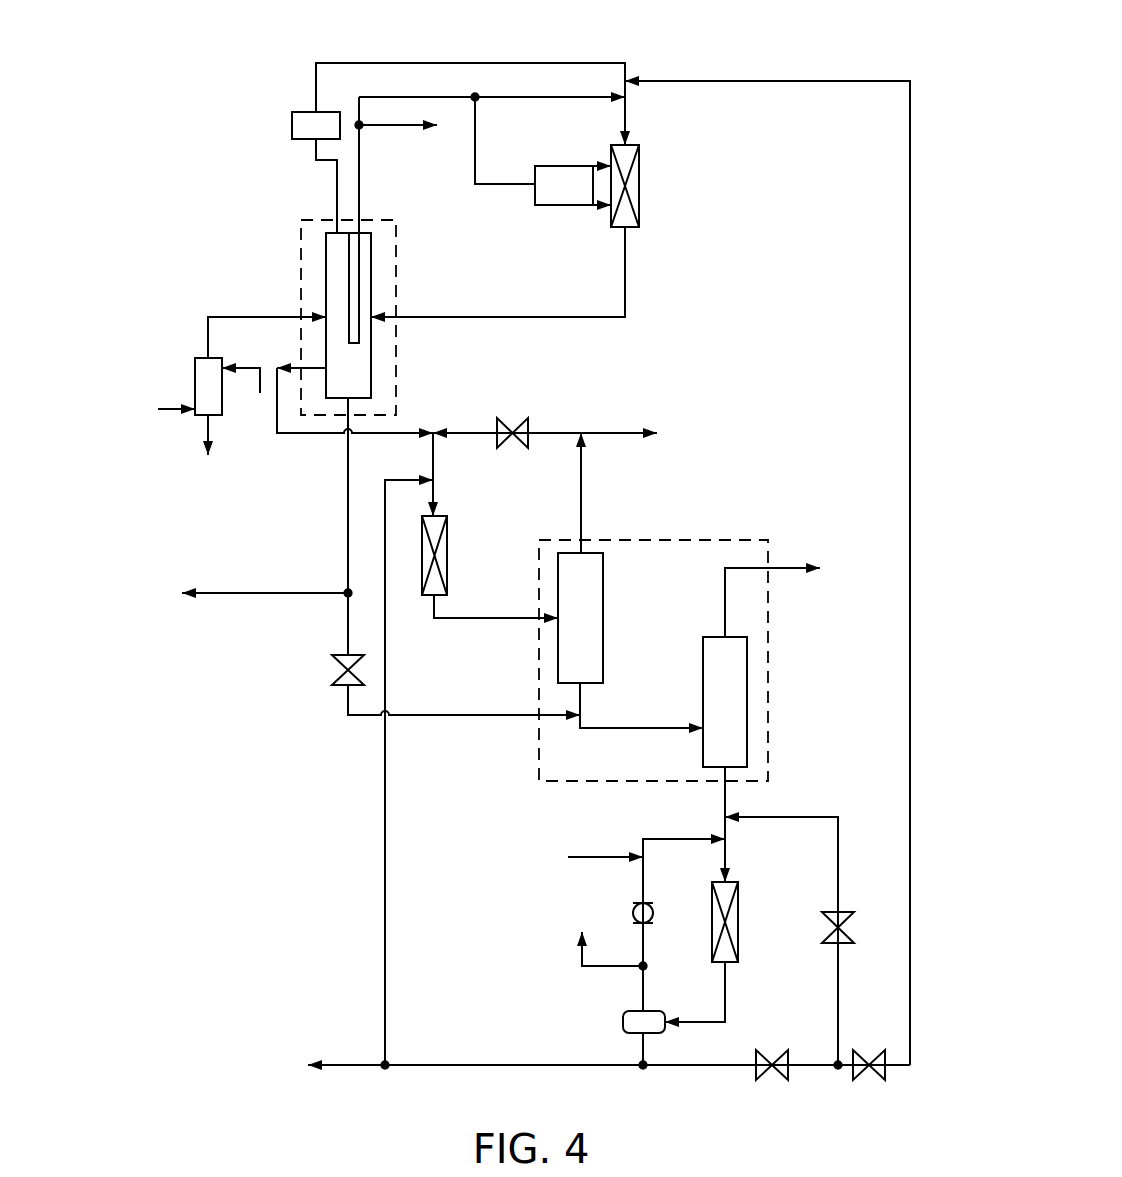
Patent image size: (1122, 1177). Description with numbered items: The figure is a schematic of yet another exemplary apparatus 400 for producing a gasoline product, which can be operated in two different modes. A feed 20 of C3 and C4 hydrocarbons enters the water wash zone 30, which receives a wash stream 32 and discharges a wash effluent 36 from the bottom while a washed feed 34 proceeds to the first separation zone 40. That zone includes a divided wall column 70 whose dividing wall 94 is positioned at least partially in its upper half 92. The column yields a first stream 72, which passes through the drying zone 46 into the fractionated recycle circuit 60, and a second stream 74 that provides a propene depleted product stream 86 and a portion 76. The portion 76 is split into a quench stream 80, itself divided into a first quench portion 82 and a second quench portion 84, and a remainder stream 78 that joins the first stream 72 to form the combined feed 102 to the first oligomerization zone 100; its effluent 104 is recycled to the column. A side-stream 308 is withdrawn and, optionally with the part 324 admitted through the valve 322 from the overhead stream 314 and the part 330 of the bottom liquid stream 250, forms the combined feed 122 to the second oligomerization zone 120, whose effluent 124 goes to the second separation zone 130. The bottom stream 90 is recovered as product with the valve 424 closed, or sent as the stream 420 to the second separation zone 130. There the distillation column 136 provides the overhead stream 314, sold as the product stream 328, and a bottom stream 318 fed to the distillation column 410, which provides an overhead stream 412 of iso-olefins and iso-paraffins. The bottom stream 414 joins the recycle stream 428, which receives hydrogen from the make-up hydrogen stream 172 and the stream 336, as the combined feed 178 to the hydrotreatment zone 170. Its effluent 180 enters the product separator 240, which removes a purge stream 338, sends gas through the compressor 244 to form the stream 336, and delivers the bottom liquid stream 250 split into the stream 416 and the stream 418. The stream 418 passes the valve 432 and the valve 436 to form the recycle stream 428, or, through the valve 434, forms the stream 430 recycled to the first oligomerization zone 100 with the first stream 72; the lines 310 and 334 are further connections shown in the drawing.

The feed 20 is at (168, 410).
The water wash zone 30 is at (198, 358).
The wash stream 32 is at (254, 367).
The washed feed 34 is at (237, 316).
The wash effluent 36 is at (214, 432).
The first separation zone 40 is at (312, 220).
The drying zone 46 is at (305, 112).
The fractionated recycle circuit 60 is at (655, 62).
The divided wall column 70 is at (336, 378).
The first stream 72 is at (332, 62).
The second stream 74 is at (360, 178).
The portion 76 is at (448, 96).
The remainder stream 78 is at (568, 96).
The quench stream 80 is at (506, 184).
The first quench portion 82 is at (574, 165).
The second quench portion 84 is at (574, 206).
The propene depleted product stream 86 is at (410, 124).
The bottom stream 90 is at (231, 598).
The upper half 92 is at (410, 324).
The dividing wall 94 is at (360, 283).
The first oligomerization zone 100 is at (640, 186).
The combined feed 102 is at (627, 116).
The effluent 104 is at (627, 303).
The second oligomerization zone 120 is at (448, 536).
The combined feed 122 is at (435, 493).
The effluent 124 is at (432, 619).
The second separation zone 130 is at (768, 540).
The distillation column 136 is at (597, 671).
The hydrotreatment zone 170 is at (740, 920).
The make-up hydrogen stream 172 is at (592, 856).
The combined feed 178 is at (727, 860).
The effluent 180 is at (727, 1005).
The product separator 240 is at (658, 1010).
The compressor 244 is at (636, 904).
The bottom liquid stream 250 is at (641, 1046).
The side-stream 308 is at (280, 444).
The recycle line 310 is at (435, 468).
The overhead stream 314 is at (583, 495).
The bottom stream 318 is at (582, 706).
The valve 322 is at (514, 418).
The part 324 is at (472, 432).
The product stream 328 is at (613, 432).
The part 330 is at (384, 761).
The outlet line 334 is at (355, 1070).
The stream 336 is at (645, 870).
The purge stream 338 is at (590, 970).
The apparatus 400 is at (850, 52).
The distillation column 410 is at (708, 746).
The overhead stream 412 is at (724, 591).
The bottom stream 414 is at (727, 797).
The stream 416 is at (595, 1070).
The stream 418 is at (672, 1070).
The stream 420 is at (346, 626).
The valve 424 is at (332, 678).
The recycle stream 428 is at (824, 816).
The stream 430 is at (909, 437).
The valve 432 is at (760, 1074).
The valve 434 is at (858, 1074).
The valve 436 is at (856, 914).